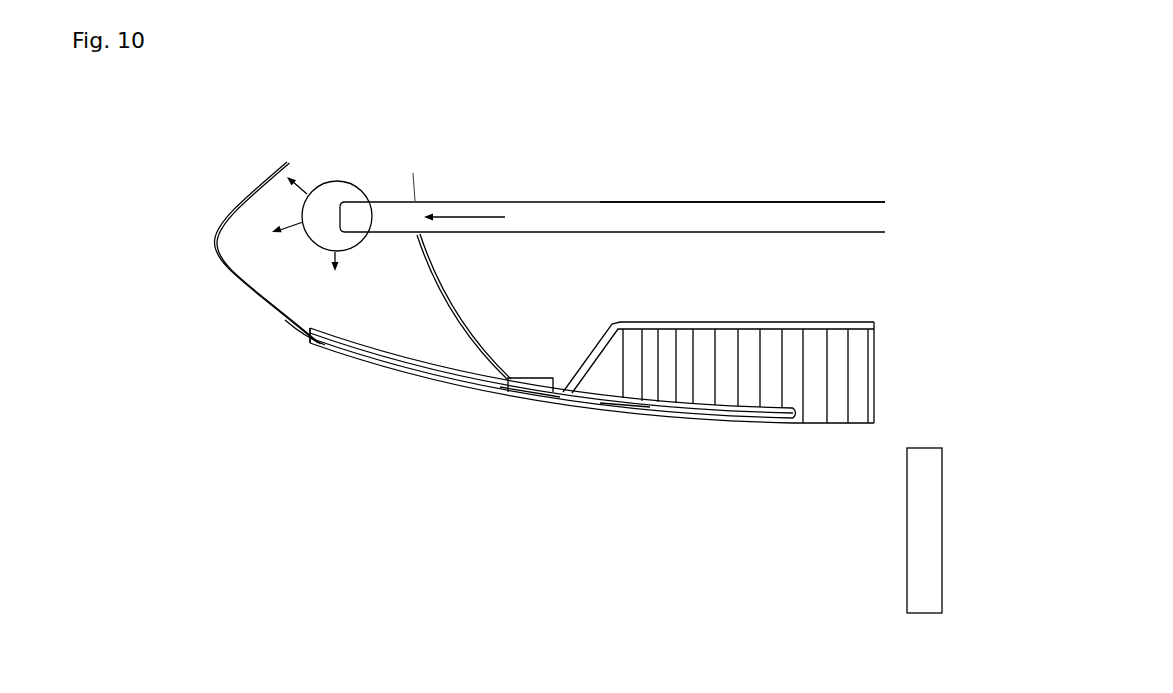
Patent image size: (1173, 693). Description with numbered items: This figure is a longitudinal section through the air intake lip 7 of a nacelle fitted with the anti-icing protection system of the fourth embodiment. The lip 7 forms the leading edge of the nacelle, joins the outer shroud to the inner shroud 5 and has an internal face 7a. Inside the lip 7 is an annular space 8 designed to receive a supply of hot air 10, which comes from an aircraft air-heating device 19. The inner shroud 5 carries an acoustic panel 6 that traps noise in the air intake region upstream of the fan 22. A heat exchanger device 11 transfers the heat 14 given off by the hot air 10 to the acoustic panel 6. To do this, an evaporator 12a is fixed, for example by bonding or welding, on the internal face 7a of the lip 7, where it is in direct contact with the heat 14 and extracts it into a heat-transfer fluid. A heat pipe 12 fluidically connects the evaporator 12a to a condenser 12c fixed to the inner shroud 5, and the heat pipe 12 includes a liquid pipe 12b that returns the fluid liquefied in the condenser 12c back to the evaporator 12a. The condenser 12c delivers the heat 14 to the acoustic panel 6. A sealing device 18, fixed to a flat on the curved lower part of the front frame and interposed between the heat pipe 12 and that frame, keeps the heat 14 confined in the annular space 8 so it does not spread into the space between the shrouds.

The inner shroud 5 is at (705, 446).
The acoustic panel 6 is at (892, 355).
The air intake lip 7 is at (198, 258).
The internal face 7a is at (289, 327).
The annular space 8 is at (259, 256).
The hot air 10 is at (465, 217).
The heat exchanger device 11 is at (437, 398).
The heat pipe 12 is at (425, 355).
The evaporator 12a is at (308, 350).
The liquid pipe 12b is at (530, 401).
The condenser 12c is at (617, 412).
The heat 14 is at (312, 174).
The sealing device 18 is at (532, 378).
The air-heating device 19 is at (607, 176).
The fan 22 is at (898, 528).